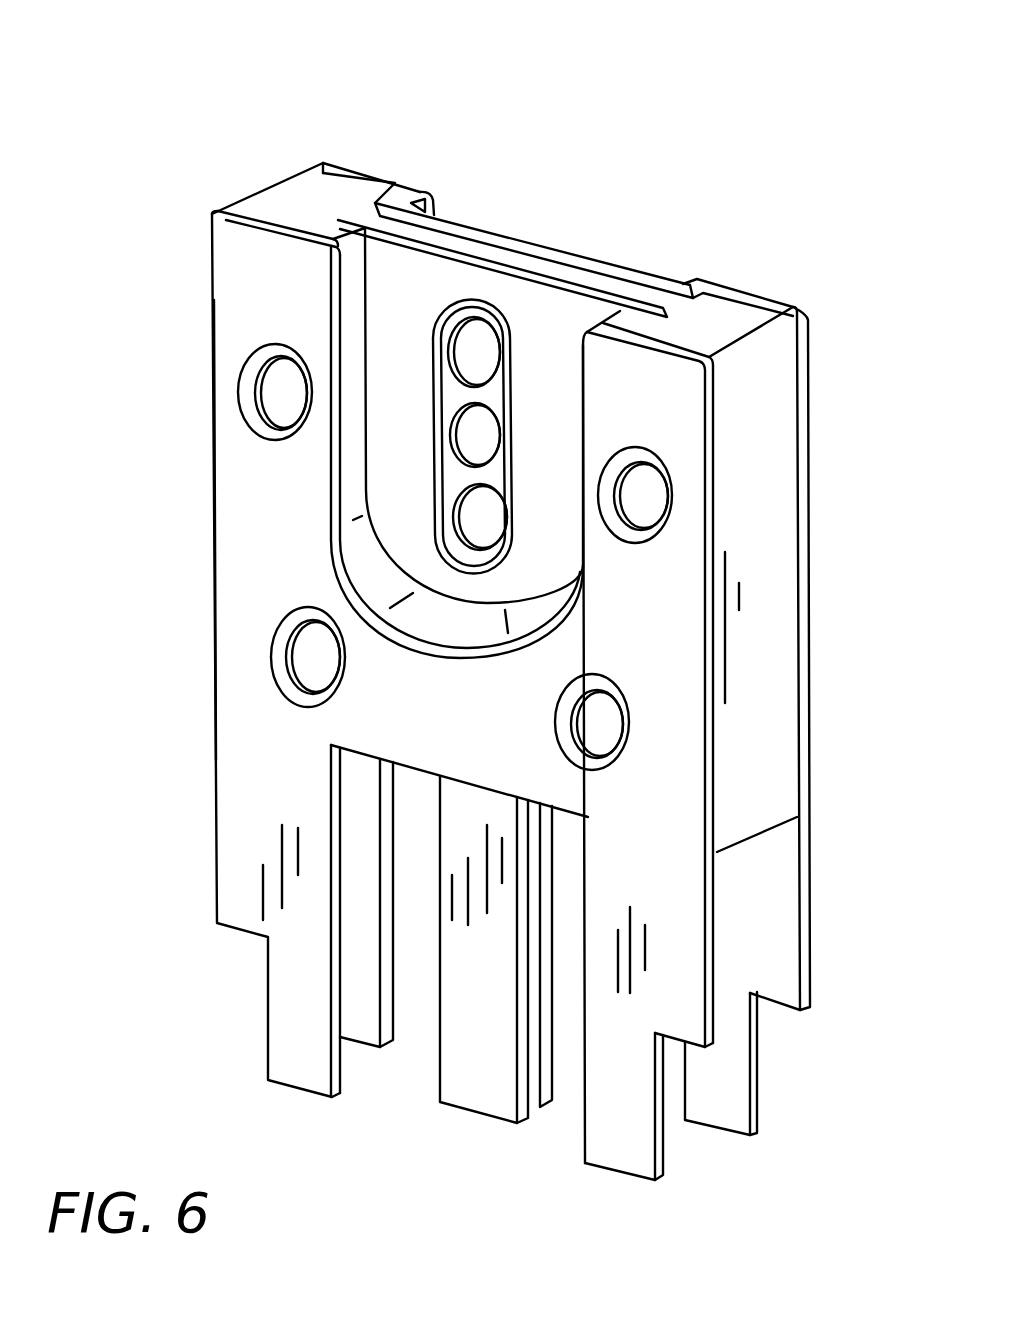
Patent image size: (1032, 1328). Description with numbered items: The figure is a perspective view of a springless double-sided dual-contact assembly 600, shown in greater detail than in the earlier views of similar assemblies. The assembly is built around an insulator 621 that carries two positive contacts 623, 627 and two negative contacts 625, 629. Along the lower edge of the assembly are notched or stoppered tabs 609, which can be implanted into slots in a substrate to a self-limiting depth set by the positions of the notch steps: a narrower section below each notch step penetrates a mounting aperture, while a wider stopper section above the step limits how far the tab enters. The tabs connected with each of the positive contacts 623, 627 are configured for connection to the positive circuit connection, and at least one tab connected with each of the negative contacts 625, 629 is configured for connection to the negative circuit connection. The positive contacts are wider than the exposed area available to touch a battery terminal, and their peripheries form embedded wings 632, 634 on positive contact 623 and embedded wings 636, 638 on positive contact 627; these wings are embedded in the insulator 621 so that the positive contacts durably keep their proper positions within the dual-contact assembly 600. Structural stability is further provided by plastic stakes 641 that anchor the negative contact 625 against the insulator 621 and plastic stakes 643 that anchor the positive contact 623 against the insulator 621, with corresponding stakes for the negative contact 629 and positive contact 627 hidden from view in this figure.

The springless double-sided dual-contact assembly 600 is at (769, 131).
The notched or stoppered tabs 609 is at (335, 1098).
The insulator 621 is at (281, 183).
The positive contact 623 is at (455, 240).
The negative contact 625 is at (212, 468).
The positive contact 627 is at (533, 243).
The negative contact 629 is at (350, 165).
The embedded wing 632 is at (338, 208).
The embedded wing 634 is at (700, 303).
The embedded wing 636 is at (397, 182).
The embedded wing 638 is at (693, 282).
The plastic stakes 641 is at (240, 371).
The plastic stakes 643 is at (457, 493).